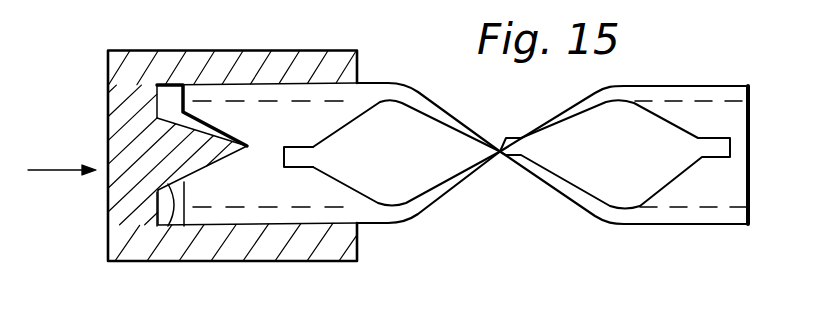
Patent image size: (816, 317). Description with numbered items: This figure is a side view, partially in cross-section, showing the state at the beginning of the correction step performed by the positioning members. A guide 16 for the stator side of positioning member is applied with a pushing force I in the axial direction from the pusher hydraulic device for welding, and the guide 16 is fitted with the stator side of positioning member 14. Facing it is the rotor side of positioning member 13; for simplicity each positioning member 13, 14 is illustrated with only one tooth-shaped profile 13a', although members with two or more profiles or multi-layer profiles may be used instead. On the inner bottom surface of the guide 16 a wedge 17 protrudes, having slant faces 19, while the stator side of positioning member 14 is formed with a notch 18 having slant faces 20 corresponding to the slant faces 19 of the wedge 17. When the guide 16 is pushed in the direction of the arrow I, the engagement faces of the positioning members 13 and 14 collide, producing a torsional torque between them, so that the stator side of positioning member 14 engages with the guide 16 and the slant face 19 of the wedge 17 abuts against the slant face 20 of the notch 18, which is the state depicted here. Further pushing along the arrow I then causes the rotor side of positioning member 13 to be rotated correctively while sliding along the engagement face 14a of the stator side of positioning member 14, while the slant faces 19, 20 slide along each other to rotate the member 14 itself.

The rotor side of positioning member 13 is at (738, 85).
The tooth-shaped profile 13a' is at (607, 154).
The stator side of positioning member 14 is at (433, 99).
The engagement face 14a is at (458, 116).
The guide 16 is at (237, 50).
The wedge 17 is at (193, 167).
The notch 18 is at (229, 150).
The slant face 19 is at (166, 226).
The slant face 20 is at (231, 149).
The pushing force I is at (62, 154).